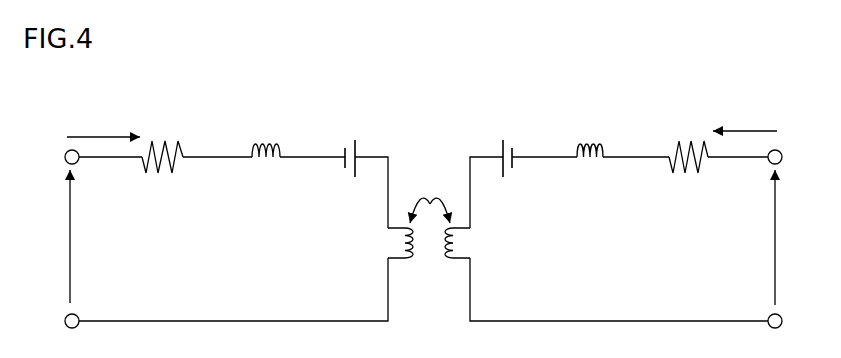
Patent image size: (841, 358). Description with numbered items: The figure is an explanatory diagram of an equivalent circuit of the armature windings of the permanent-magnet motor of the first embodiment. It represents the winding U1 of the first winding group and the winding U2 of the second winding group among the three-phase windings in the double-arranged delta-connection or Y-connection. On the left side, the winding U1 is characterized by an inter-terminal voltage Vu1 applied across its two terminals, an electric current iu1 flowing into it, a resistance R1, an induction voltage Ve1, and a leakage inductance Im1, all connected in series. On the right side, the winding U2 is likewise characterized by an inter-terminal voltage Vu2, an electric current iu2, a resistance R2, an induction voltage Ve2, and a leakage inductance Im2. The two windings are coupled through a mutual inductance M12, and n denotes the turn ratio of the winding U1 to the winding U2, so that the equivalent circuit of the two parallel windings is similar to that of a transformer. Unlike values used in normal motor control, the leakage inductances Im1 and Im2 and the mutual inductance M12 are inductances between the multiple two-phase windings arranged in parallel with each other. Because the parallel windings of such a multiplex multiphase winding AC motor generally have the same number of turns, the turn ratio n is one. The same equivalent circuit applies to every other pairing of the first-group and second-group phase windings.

The winding of the first armature winding group U1 is at (226, 239).
The winding of the second winding group U2 is at (626, 239).
The resistance R1 is at (162, 132).
The resistance R2 is at (688, 132).
The leakage inductance Im1 is at (267, 124).
The leakage inductance Im2 is at (590, 124).
The induction voltage Ve1 is at (353, 134).
The induction voltage Ve2 is at (508, 134).
The electric current iu1 is at (103, 116).
The electric current iu2 is at (745, 114).
The inter-terminal voltage Vu1 is at (49, 236).
The inter-terminal voltage Vu2 is at (797, 237).
The mutual inductance M12 is at (432, 200).
The turn ratio n is at (429, 258).